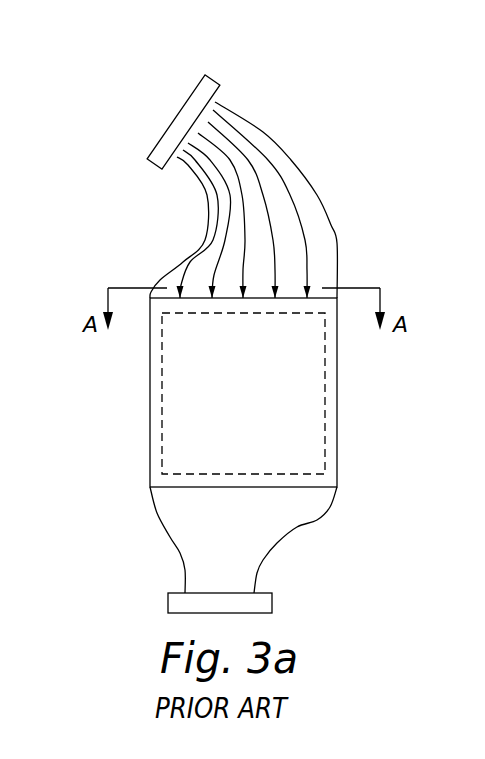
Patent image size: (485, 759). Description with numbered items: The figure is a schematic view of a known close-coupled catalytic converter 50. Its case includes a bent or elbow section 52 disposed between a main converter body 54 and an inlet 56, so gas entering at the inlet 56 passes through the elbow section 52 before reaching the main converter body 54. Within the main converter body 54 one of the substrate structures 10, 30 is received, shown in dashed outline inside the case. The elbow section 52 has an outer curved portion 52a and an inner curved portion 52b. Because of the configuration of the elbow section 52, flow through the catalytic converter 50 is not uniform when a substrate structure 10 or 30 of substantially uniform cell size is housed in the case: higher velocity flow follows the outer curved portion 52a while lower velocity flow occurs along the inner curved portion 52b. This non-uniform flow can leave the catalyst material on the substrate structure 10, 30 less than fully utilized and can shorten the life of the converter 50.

The catalytic converter 50 is at (337, 545).
The elbow section 52 is at (256, 200).
The outer curved portion 52a is at (308, 184).
The inner curved portion 52b is at (197, 174).
The main converter body 54 is at (149, 427).
The inlet 56 is at (177, 117).
The substrate structure 10 is at (294, 393).
The substrate structure 30 is at (245, 413).